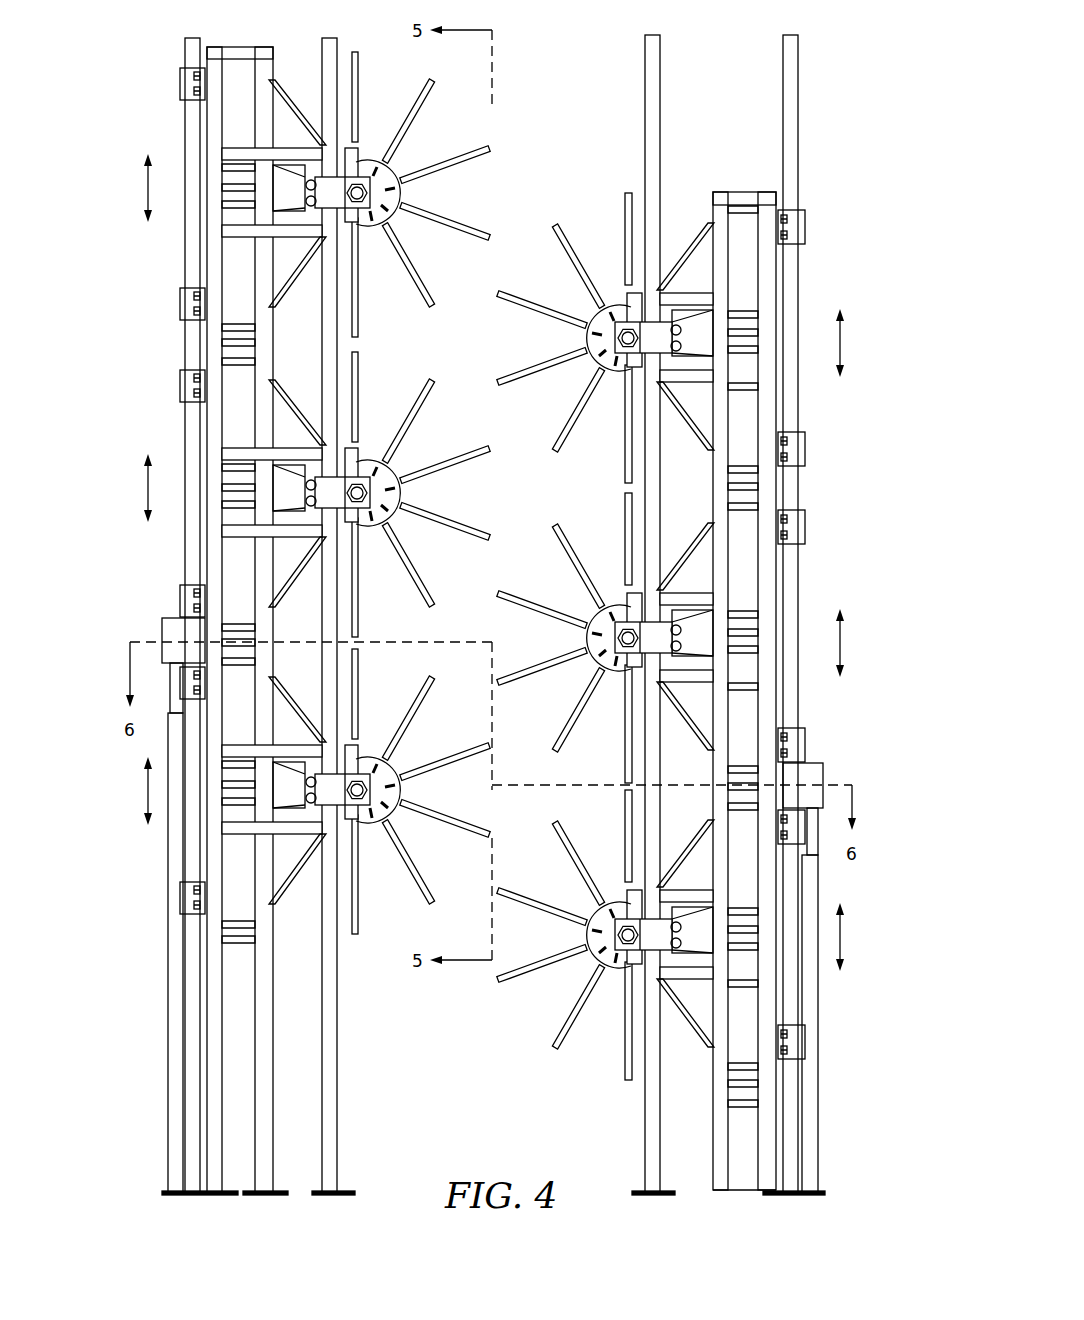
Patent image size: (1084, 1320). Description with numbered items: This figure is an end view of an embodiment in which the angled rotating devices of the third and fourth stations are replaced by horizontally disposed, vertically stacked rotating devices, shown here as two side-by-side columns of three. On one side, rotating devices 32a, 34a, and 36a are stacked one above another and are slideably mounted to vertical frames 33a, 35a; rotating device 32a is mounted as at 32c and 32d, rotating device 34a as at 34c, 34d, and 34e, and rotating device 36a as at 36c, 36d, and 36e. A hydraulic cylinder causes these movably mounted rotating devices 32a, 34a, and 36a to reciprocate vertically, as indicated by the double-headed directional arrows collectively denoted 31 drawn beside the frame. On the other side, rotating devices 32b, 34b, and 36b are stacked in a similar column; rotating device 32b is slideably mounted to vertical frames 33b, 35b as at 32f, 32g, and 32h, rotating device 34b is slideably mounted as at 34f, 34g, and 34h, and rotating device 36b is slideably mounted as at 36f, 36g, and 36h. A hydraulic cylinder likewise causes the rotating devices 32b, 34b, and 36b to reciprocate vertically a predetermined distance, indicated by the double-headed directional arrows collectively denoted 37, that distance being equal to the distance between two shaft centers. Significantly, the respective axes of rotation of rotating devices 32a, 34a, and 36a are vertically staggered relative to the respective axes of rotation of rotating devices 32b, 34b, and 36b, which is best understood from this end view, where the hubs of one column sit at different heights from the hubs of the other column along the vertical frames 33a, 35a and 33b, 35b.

The double-headed directional arrows 31 is at (842, 343).
The rotating device 32a is at (596, 222).
The rotating device 32b is at (417, 150).
The slideable mounting 32c is at (805, 225).
The slideable mounting 32d is at (805, 447).
The slideable mounting 32f is at (185, 90).
The slideable mounting 32g is at (183, 303).
The slideable mounting 32h is at (333, 200).
The vertical frame 33a is at (800, 93).
The vertical frame 33b is at (187, 130).
The rotating device 34a is at (603, 528).
The rotating device 34b is at (428, 498).
The slideable mounting 34c is at (805, 528).
The slideable mounting 34d is at (805, 745).
The slideable mounting 34e is at (598, 640).
The slideable mounting 34f is at (183, 388).
The slideable mounting 34g is at (183, 605).
The slideable mounting 34h is at (340, 492).
The vertical frame 35a is at (660, 80).
The vertical frame 35b is at (322, 60).
The rotating device 36a is at (606, 830).
The rotating device 36b is at (417, 747).
The slideable mounting 36c is at (805, 832).
The slideable mounting 36d is at (805, 1040).
The slideable mounting 36e is at (598, 938).
The slideable mounting 36f is at (183, 683).
The slideable mounting 36g is at (183, 898).
The slideable mounting 36h is at (333, 800).
The double-headed directional arrows 37 is at (146, 188).